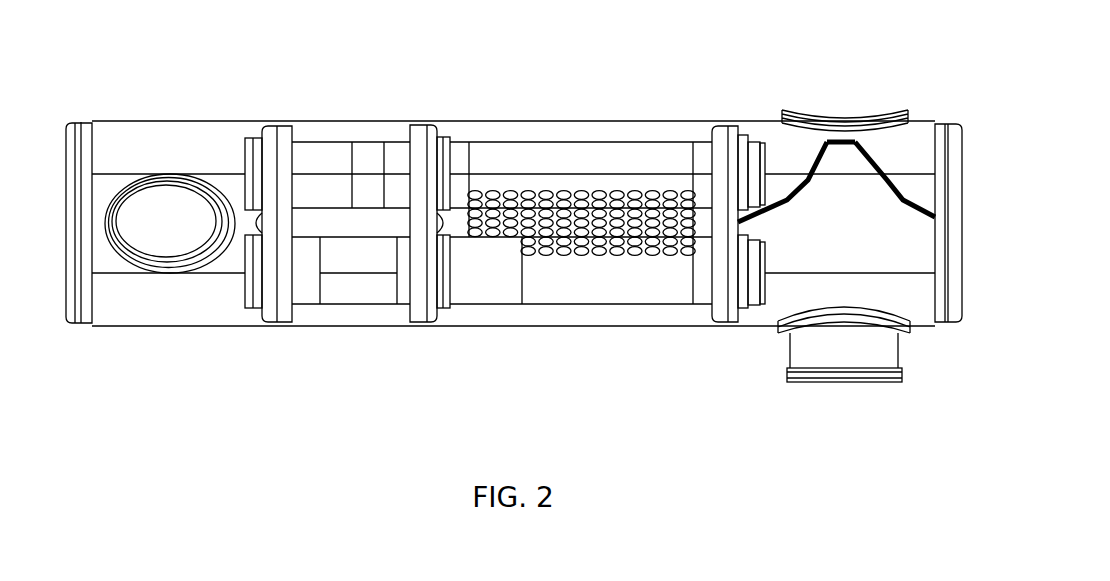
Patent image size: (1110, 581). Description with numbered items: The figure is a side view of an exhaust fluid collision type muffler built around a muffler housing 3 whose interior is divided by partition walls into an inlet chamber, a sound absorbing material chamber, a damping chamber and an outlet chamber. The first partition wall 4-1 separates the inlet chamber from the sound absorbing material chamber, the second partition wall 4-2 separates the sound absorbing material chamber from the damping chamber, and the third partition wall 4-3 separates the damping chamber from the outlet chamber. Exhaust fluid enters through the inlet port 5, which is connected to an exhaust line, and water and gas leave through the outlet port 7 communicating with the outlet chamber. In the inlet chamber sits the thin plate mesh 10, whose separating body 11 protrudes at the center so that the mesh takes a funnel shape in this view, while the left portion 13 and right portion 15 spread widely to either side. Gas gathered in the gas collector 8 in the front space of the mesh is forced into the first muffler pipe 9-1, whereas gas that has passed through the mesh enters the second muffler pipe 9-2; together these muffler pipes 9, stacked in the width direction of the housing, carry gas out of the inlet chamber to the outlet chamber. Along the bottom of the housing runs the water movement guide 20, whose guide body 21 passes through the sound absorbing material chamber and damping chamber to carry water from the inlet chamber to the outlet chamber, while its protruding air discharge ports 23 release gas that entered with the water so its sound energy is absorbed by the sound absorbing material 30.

The muffler housing 3 is at (158, 121).
The outlet port 7 is at (140, 173).
The gas collector 8 is at (812, 110).
The inlet port 5 is at (880, 348).
The first partition wall 4-1 is at (722, 312).
The second partition wall 4-2 is at (418, 127).
The third partition wall 4-3 is at (283, 312).
The muffler pipes 9 is at (337, 156).
The first muffler pipe 9-1 is at (303, 250).
The second muffler pipe 9-2 is at (340, 163).
The sound absorbing material 30 is at (640, 130).
The water movement guide 20 is at (502, 293).
The guide body 21 is at (370, 225).
The air discharge ports 23 is at (581, 298).
The thin plate mesh 10 is at (840, 114).
The right portion 15 is at (781, 196).
The separating body 11 is at (873, 155).
The left portion 13 is at (910, 196).